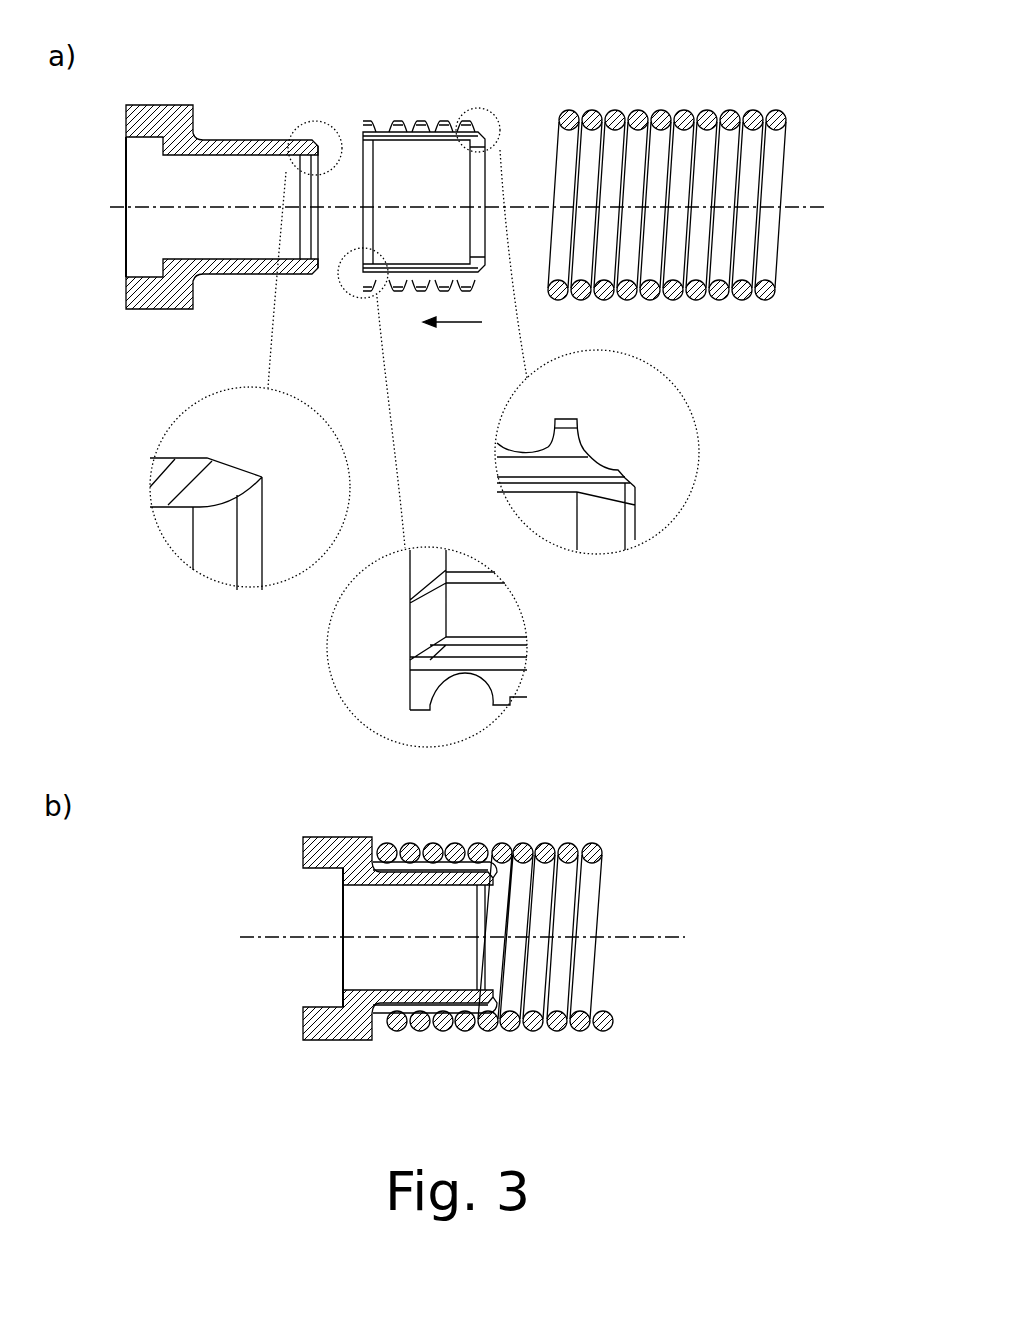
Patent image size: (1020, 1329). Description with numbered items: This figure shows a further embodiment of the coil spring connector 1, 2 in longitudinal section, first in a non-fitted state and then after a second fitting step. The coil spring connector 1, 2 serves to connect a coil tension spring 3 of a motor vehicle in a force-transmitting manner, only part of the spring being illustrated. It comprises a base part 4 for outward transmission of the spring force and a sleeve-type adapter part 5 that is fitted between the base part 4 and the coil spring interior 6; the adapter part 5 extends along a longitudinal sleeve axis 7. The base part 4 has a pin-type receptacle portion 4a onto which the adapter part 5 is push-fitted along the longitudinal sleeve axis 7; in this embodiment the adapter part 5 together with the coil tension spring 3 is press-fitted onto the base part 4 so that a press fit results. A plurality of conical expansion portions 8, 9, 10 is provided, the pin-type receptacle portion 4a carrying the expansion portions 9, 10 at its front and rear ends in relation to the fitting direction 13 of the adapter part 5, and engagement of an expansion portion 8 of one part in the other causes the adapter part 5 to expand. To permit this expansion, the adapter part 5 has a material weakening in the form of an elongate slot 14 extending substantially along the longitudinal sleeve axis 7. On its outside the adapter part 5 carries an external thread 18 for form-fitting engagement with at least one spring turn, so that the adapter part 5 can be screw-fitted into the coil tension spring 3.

The coil spring connector 1 is at (235, 72).
The coil spring connector 2 is at (449, 413).
The coil tension spring 3 is at (600, 520).
The base part 4 is at (318, 599).
The pin-type receptacle portion 4a is at (235, 140).
The sleeve-type adapter part 5 is at (448, 521).
The coil spring interior 6 is at (642, 142).
The longitudinal sleeve axis 7 is at (792, 207).
The expansion portion 8 is at (247, 472).
The expansion portion 9 is at (420, 650).
The expansion portion 10 is at (608, 500).
The fitting direction 13 is at (452, 323).
The slot 14 is at (422, 587).
The external thread 18 is at (390, 124).